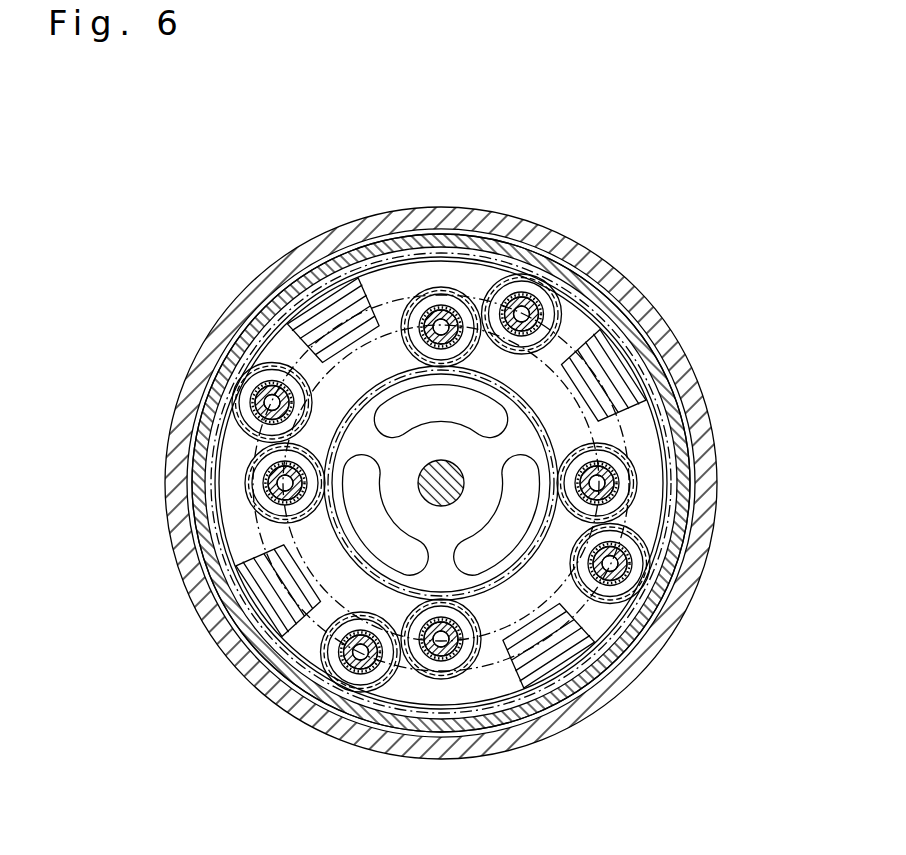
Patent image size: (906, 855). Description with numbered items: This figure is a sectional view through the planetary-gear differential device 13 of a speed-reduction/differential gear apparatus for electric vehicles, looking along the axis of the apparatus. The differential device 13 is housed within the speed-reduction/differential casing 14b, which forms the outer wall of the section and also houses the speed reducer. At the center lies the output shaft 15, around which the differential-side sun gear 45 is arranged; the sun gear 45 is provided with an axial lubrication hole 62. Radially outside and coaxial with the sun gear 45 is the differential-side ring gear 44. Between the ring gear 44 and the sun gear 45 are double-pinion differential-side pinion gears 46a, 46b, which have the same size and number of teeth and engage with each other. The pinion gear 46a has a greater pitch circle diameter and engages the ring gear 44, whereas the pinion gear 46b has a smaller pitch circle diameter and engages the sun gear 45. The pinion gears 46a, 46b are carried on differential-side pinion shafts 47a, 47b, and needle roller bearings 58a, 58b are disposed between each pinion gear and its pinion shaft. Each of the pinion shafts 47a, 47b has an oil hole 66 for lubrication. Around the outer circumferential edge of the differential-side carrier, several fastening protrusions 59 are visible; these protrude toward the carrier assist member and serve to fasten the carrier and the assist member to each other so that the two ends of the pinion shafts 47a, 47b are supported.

The planetary-gear differential device 13 is at (283, 290).
The speed-reduction/differential casing 14b is at (473, 220).
The output shaft 15 is at (438, 486).
The differential-side ring gear 44 is at (525, 257).
The differential-side sun gear 45 is at (527, 405).
The differential-side pinion gear 46a is at (542, 292).
The differential-side pinion gear 46b is at (437, 317).
The differential-side pinion shaft 47a is at (632, 562).
The differential-side pinion shaft 47b is at (613, 470).
The needle roller bearing 58a is at (277, 390).
The needle roller bearing 58b is at (278, 488).
The fastening protrusion 59 is at (328, 305).
The axial lubrication hole 62 is at (507, 538).
The oil hole 66 is at (355, 655).